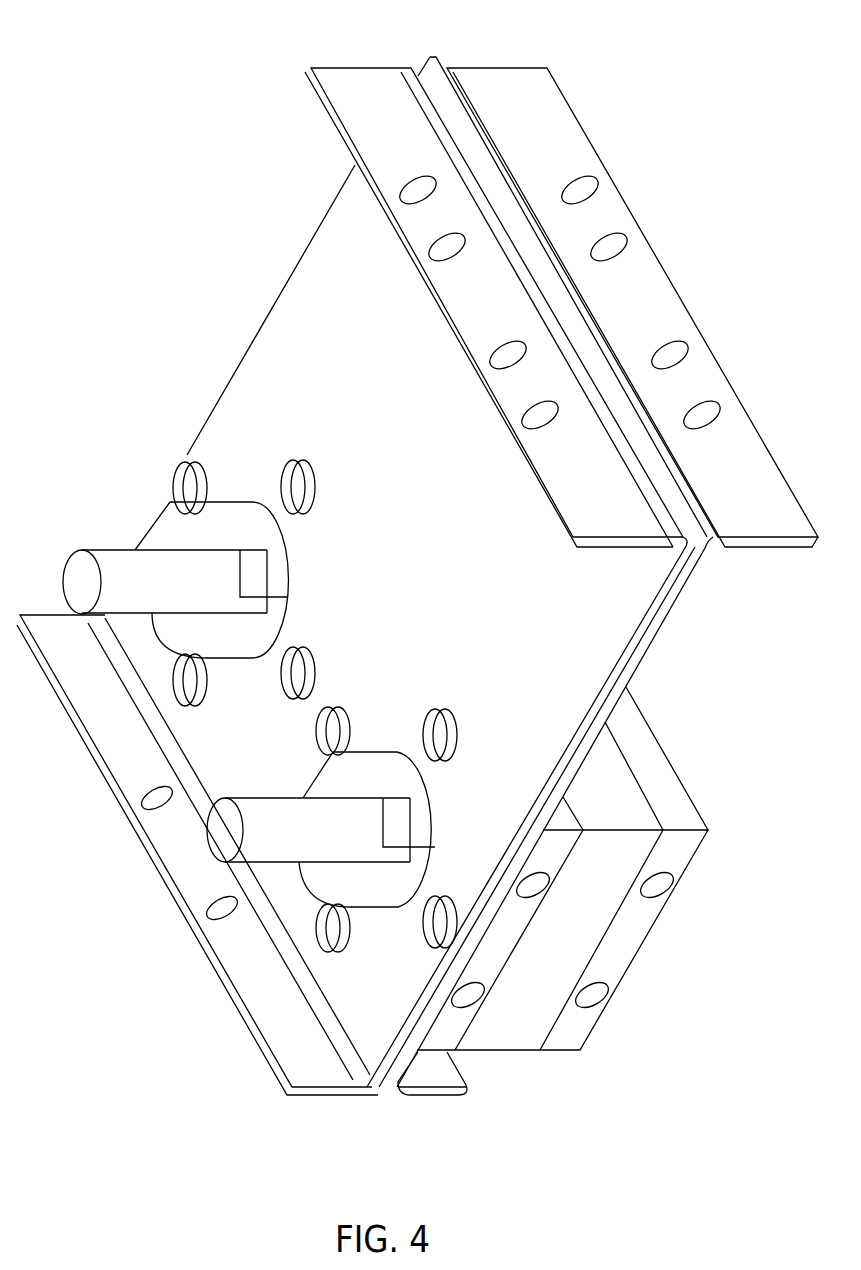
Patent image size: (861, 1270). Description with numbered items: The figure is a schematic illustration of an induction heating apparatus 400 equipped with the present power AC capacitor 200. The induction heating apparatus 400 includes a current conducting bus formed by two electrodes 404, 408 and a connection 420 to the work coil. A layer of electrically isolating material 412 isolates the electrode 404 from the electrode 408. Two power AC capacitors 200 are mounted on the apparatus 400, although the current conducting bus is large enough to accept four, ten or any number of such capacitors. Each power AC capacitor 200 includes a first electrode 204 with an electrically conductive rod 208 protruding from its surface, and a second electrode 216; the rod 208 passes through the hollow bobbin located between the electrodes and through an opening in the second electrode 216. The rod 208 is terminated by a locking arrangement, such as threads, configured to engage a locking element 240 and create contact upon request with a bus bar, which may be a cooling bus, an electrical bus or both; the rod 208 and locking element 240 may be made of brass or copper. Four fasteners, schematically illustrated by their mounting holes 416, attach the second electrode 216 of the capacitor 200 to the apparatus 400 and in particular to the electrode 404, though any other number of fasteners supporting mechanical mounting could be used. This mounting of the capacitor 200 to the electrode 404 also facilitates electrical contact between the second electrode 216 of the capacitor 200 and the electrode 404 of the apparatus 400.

The power AC capacitor 200 is at (562, 900).
The first electrode 204 is at (675, 800).
The electrically conductive rod 208 is at (88, 568).
The second electrode 216 is at (463, 1020).
The locking element 240 is at (365, 775).
The induction heating apparatus 400 is at (220, 338).
The electrode 404 is at (540, 88).
The electrode 408 is at (307, 72).
The layer of electrically isolating material 412 is at (692, 535).
The mounting holes 416 is at (302, 498).
The connection to work coil 420 is at (156, 915).